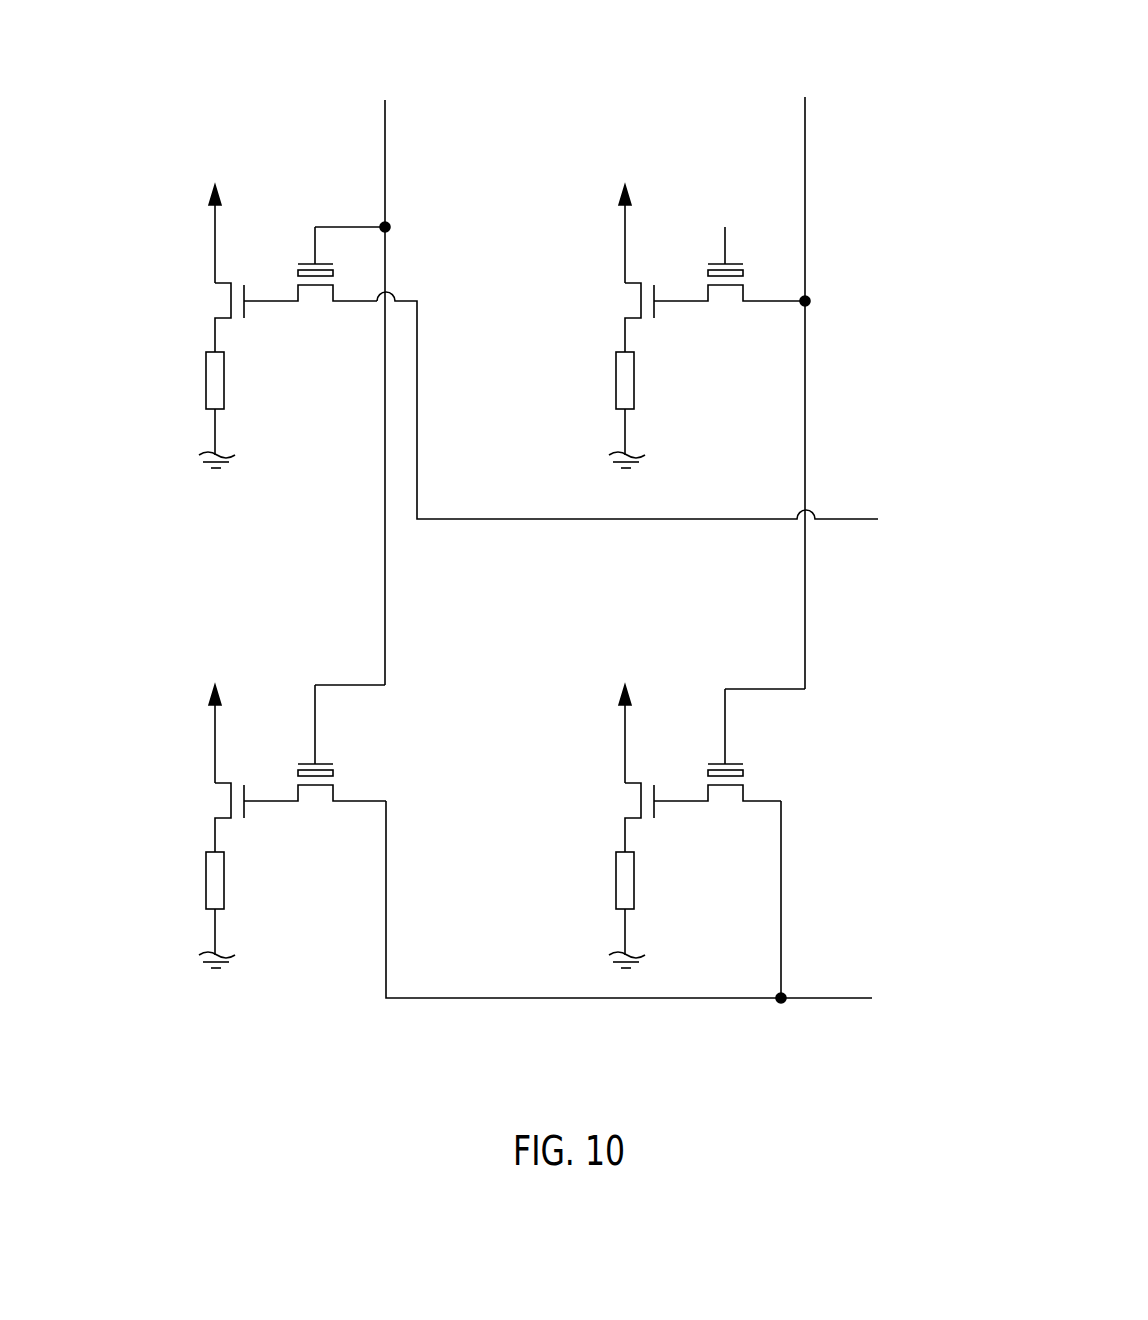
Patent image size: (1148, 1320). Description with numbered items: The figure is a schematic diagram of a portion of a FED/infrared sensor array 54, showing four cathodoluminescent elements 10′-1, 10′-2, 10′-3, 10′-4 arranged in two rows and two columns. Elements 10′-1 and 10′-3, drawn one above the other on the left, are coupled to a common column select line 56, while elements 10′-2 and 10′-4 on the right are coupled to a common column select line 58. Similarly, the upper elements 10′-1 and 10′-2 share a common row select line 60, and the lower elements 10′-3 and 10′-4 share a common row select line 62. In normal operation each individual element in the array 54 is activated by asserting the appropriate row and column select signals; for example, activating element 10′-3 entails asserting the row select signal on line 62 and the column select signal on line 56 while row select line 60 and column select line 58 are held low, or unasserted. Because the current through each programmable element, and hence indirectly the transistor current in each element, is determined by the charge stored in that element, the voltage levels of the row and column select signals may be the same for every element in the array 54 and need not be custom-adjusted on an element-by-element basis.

The FED/infrared sensor array 54 is at (514, 539).
The column select line 56 is at (387, 158).
The column select line 58 is at (807, 158).
The row select line 60 is at (832, 519).
The row select line 62 is at (835, 998).
The cathodoluminescent element 10′-1 is at (172, 290).
The cathodoluminescent element 10′-2 is at (594, 290).
The cathodoluminescent element 10′-3 is at (172, 768).
The cathodoluminescent element 10′-4 is at (594, 768).